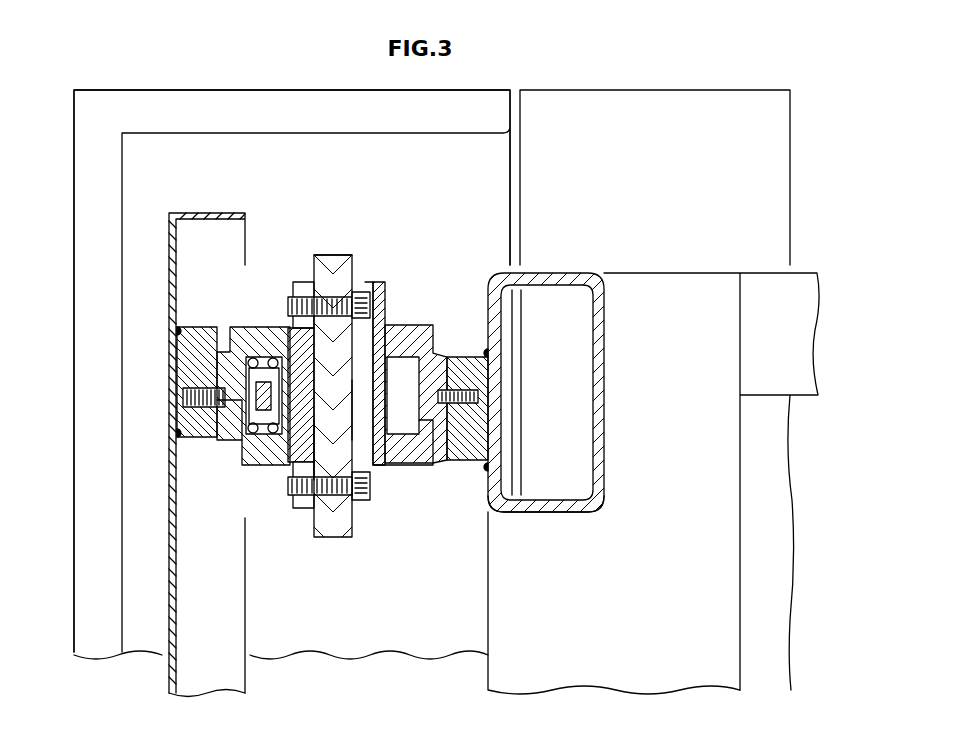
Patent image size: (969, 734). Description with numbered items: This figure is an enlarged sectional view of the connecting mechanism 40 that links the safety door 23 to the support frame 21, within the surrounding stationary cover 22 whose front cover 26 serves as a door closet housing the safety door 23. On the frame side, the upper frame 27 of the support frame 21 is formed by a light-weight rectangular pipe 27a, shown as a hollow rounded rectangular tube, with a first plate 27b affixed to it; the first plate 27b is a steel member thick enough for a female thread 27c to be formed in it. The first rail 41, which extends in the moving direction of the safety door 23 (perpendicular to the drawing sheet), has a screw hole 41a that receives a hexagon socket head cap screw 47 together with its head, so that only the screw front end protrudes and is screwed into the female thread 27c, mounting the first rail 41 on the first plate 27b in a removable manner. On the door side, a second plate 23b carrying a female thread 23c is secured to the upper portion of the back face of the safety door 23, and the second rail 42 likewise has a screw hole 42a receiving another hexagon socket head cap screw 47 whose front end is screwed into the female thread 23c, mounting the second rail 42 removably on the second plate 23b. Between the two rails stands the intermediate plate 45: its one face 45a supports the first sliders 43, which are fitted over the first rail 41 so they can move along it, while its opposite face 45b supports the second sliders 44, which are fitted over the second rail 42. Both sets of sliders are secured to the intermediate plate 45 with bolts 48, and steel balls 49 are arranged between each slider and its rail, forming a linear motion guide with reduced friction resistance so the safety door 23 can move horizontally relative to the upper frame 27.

The support frame 21 is at (665, 270).
The stationary cover 22 is at (73, 383).
The front cover 26 is at (266, 371).
The safety door 23 is at (168, 680).
The second plate 23b is at (193, 352).
The female thread 23c is at (207, 403).
The upper frame 27 is at (548, 270).
The light-weight rectangular pipe 27a is at (541, 513).
The first plate 27b is at (480, 365).
The female thread 27c is at (460, 404).
The connecting mechanism 40 is at (335, 233).
The first rail 41 is at (440, 360).
The screw hole 41a is at (420, 430).
The second rail 42 is at (223, 363).
The screw hole 42a is at (240, 402).
The first sliders 43 is at (393, 455).
The second sliders 44 is at (300, 285).
The intermediate plate 45 is at (338, 530).
The one face 45a is at (352, 410).
The another face 45b is at (305, 455).
The hexagon socket head cap screw 47 is at (272, 395).
The bolts 48 is at (362, 300).
The steel balls 49 is at (253, 358).